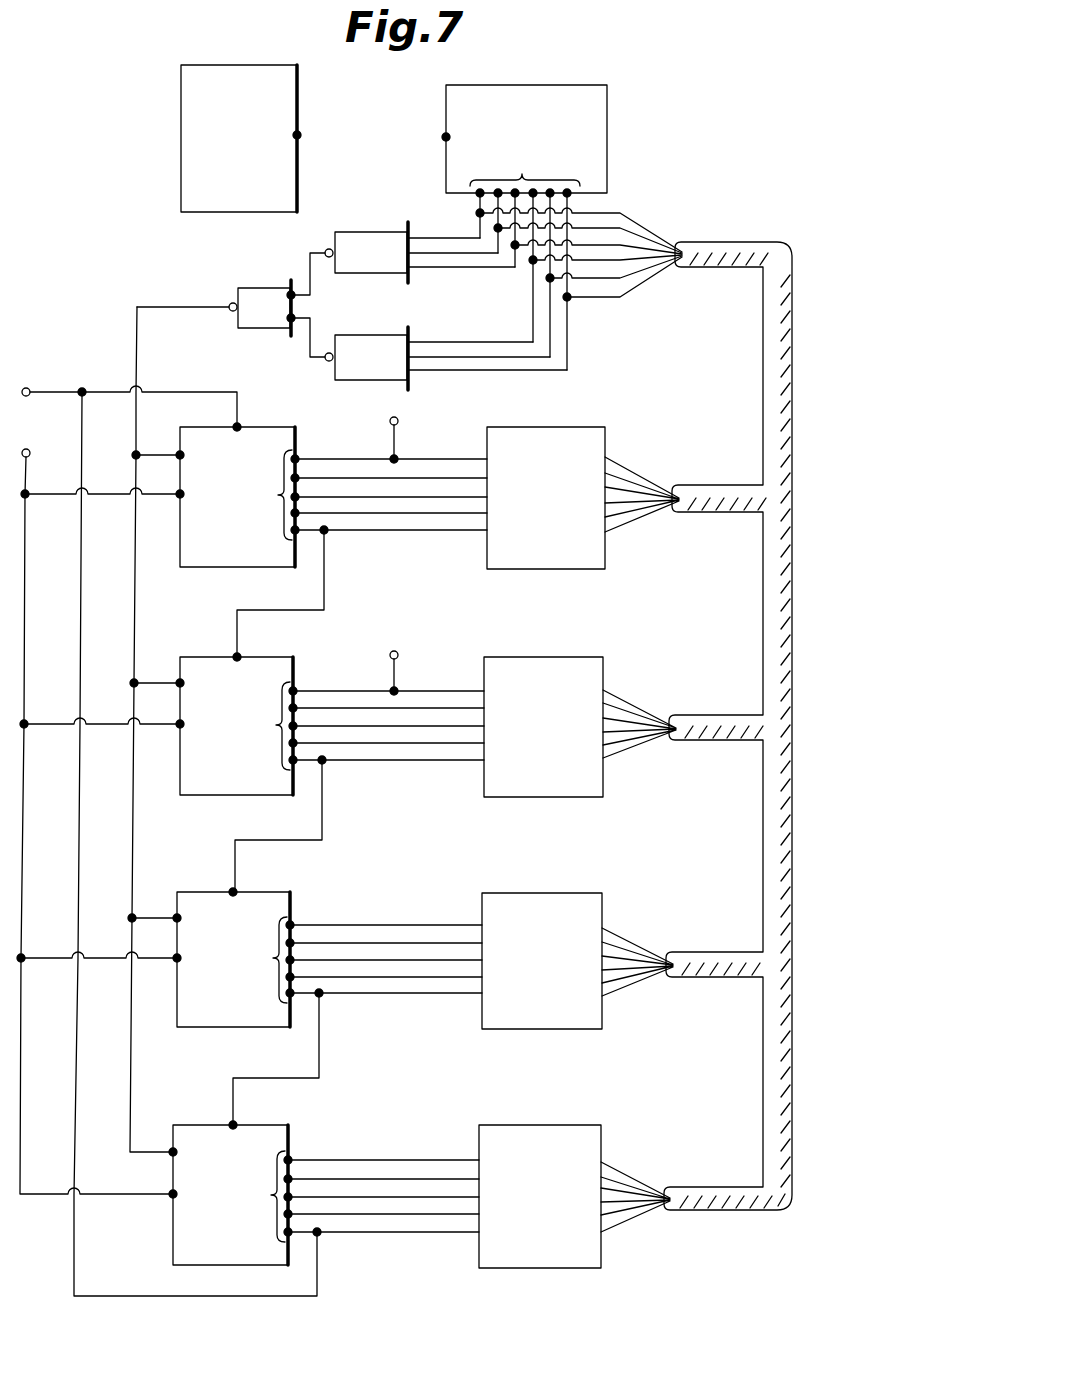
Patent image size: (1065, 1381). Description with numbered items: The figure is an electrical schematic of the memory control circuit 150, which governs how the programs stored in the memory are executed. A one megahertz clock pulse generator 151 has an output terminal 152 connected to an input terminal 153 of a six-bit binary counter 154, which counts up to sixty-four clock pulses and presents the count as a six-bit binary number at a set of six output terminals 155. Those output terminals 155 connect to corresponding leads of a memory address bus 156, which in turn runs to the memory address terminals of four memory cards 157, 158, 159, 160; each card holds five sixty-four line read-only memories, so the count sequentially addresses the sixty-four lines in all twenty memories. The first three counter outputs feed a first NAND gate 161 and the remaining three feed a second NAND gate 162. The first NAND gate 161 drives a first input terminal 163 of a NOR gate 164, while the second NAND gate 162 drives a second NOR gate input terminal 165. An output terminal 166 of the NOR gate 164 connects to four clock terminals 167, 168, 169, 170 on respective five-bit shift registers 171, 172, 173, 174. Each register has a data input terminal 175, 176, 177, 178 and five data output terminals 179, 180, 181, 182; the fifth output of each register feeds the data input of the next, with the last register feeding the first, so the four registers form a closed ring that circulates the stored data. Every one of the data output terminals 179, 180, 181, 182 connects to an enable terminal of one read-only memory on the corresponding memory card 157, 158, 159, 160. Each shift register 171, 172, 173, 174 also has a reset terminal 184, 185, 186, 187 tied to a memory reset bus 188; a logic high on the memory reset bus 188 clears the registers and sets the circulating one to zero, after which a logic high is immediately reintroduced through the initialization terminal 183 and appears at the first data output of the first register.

The memory control circuit 150 is at (170, 275).
The clock pulse generator 151 is at (178, 92).
The output terminal 152 is at (298, 136).
The input terminal 153 is at (446, 137).
The six-bit binary counter 154 is at (612, 137).
The output terminals 155 is at (576, 259).
The memory address bus 156 is at (762, 358).
The memory card 157 is at (568, 506).
The memory card 158 is at (567, 741).
The memory card 159 is at (567, 973).
The memory card 160 is at (558, 1201).
The first NAND gate 161 is at (382, 232).
The second NAND gate 162 is at (384, 314).
The first input terminal 163 is at (292, 294).
The NOR gate 164 is at (250, 288).
The second NOR gate input terminal 165 is at (292, 320).
The output terminal 166 is at (230, 311).
The clock terminal 167 is at (180, 454).
The clock terminal 168 is at (180, 682).
The clock terminal 169 is at (177, 917).
The clock terminal 170 is at (173, 1151).
The shift register 171 is at (248, 472).
The shift register 172 is at (252, 703).
The shift register 173 is at (246, 938).
The shift register 174 is at (243, 1167).
The data input terminal 175 is at (241, 426).
The data input terminal 176 is at (241, 656).
The data input terminal 177 is at (238, 891).
The data input terminal 178 is at (238, 1124).
The data output terminals 179 is at (276, 496).
The data output terminals 180 is at (357, 787).
The data output terminals 181 is at (357, 1021).
The data output terminals 182 is at (348, 1196).
The initialization terminal 183 is at (30, 388).
The reset terminal 184 is at (178, 498).
The reset terminal 185 is at (178, 727).
The reset terminal 186 is at (175, 962).
The reset terminal 187 is at (171, 1198).
The memory reset bus 188 is at (29, 449).